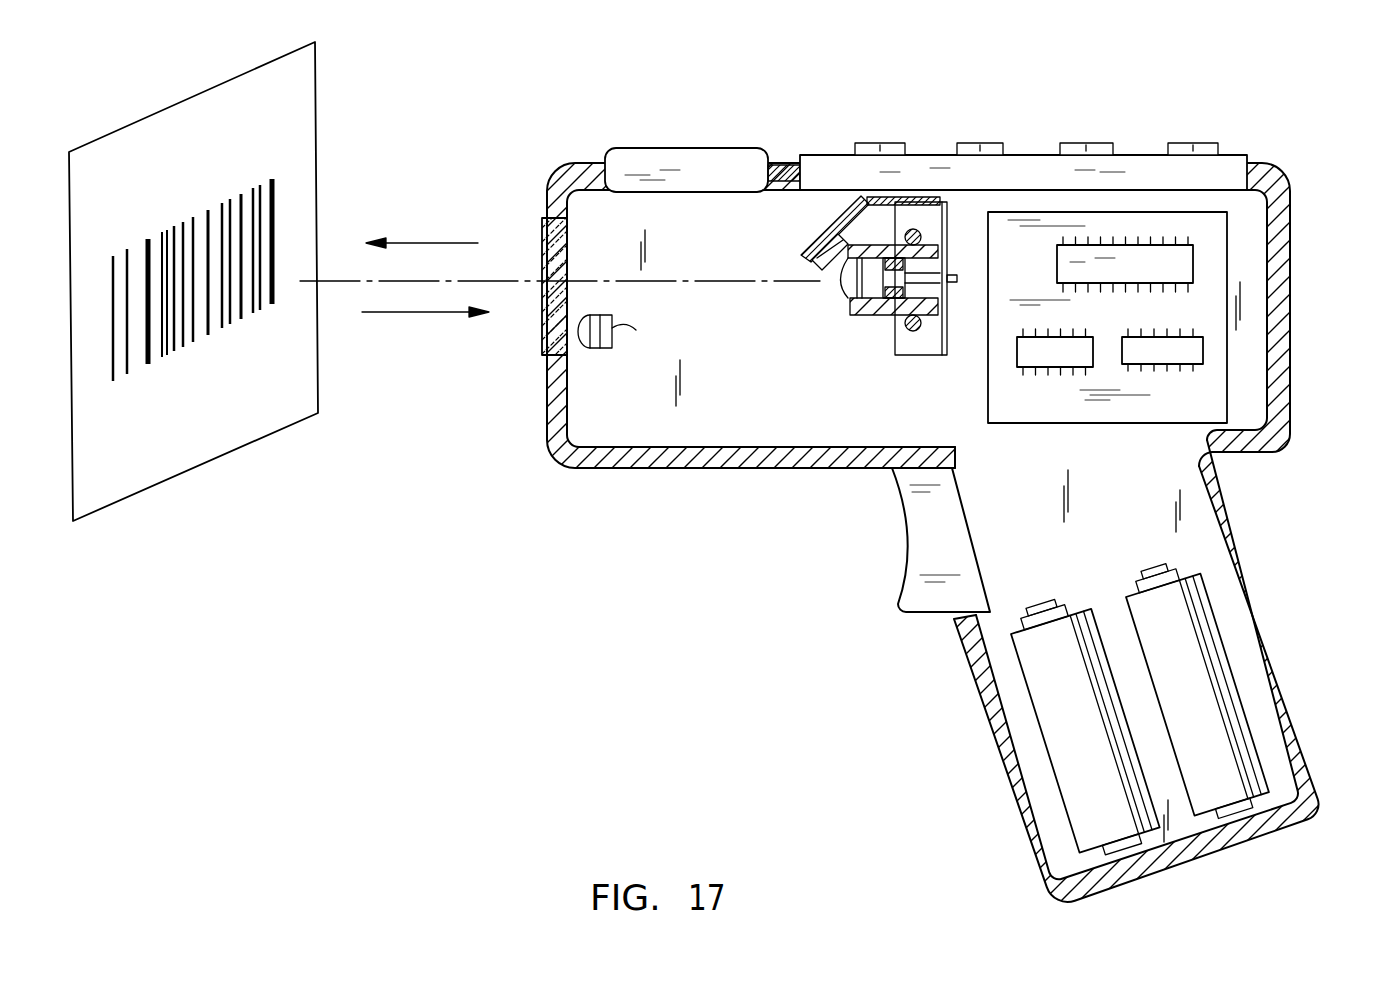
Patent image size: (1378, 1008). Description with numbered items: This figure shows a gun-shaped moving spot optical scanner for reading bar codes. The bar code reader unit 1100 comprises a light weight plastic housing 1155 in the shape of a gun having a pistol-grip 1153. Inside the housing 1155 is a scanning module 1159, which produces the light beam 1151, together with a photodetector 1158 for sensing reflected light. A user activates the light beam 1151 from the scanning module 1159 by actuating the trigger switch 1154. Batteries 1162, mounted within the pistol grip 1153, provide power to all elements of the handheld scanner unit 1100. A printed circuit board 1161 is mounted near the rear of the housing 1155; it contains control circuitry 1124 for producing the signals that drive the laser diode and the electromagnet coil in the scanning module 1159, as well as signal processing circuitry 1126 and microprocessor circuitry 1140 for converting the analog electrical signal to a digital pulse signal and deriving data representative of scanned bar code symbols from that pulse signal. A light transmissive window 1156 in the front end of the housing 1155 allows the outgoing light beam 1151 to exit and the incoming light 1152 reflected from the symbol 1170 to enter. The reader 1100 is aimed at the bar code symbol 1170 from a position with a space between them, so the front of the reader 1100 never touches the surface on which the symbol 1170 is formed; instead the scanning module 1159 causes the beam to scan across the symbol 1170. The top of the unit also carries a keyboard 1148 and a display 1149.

The bar code reader unit 1100 is at (724, 709).
The control circuitry 1124 is at (1017, 352).
The signal processing circuitry 1126 is at (1174, 367).
The microprocessor circuitry 1140 is at (1080, 253).
The keyboard 1148 is at (1149, 158).
The display 1149 is at (642, 150).
The light beam 1151 is at (417, 243).
The incoming light 1152 is at (427, 313).
The pistol-grip 1153 is at (1003, 766).
The trigger switch 1154 is at (898, 596).
The housing 1155 is at (1291, 352).
The light transmissive window 1156 is at (540, 243).
The photodetector 1158 is at (597, 353).
The scanning module 1159 is at (913, 199).
The printed circuit board 1161 is at (1224, 272).
The batteries 1162 is at (1200, 578).
The symbol 1170 is at (221, 208).